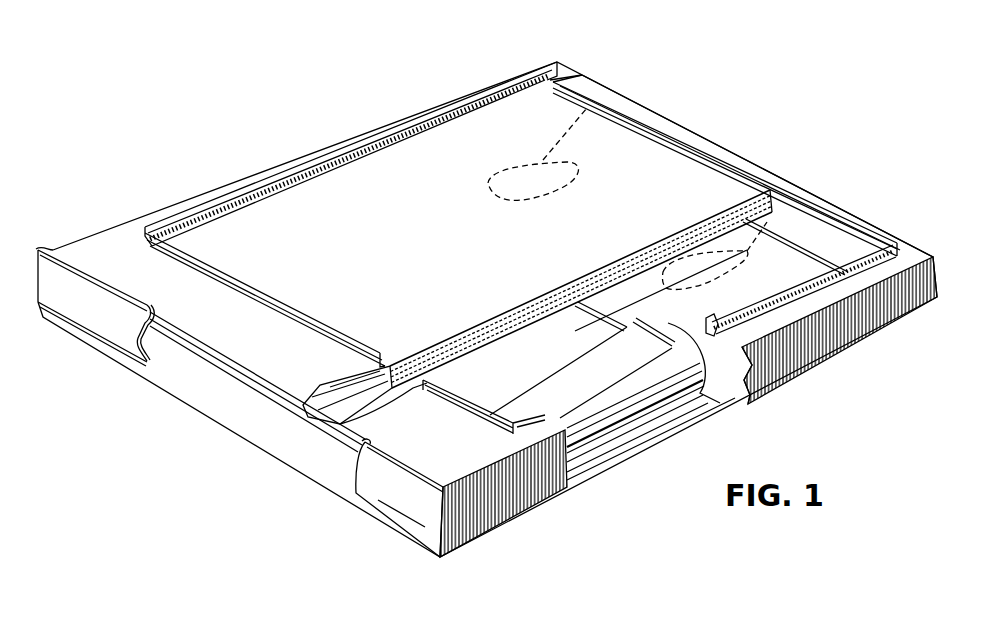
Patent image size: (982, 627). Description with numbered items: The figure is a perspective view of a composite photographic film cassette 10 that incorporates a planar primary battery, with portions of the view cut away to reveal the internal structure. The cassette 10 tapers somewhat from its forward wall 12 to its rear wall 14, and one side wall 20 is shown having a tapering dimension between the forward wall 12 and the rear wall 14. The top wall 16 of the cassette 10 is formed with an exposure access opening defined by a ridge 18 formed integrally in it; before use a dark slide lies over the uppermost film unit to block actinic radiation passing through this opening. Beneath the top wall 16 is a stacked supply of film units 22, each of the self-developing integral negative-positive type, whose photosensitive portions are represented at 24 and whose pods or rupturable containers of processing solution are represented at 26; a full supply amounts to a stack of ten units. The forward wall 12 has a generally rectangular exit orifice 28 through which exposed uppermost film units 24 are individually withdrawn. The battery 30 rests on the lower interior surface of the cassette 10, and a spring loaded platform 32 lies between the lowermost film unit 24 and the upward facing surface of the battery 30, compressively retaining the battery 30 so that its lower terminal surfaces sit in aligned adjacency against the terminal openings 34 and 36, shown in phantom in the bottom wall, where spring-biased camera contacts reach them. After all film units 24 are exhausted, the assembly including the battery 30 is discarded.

The photographic film cassette 10 is at (398, 92).
The forward wall 12 is at (372, 493).
The rear wall 14 is at (905, 240).
The top wall 16 is at (108, 255).
The ridge 18 is at (325, 150).
The side wall 20 is at (482, 497).
The stacked supply of film units 22 is at (723, 214).
The photosensitive portions of the film units 24 is at (668, 165).
The pods 26 is at (312, 408).
The exit orifice 28 is at (197, 362).
The battery 30 is at (612, 460).
The spring loaded platform 32 is at (735, 400).
The terminal opening 34 is at (815, 183).
The terminal opening 36 is at (605, 90).